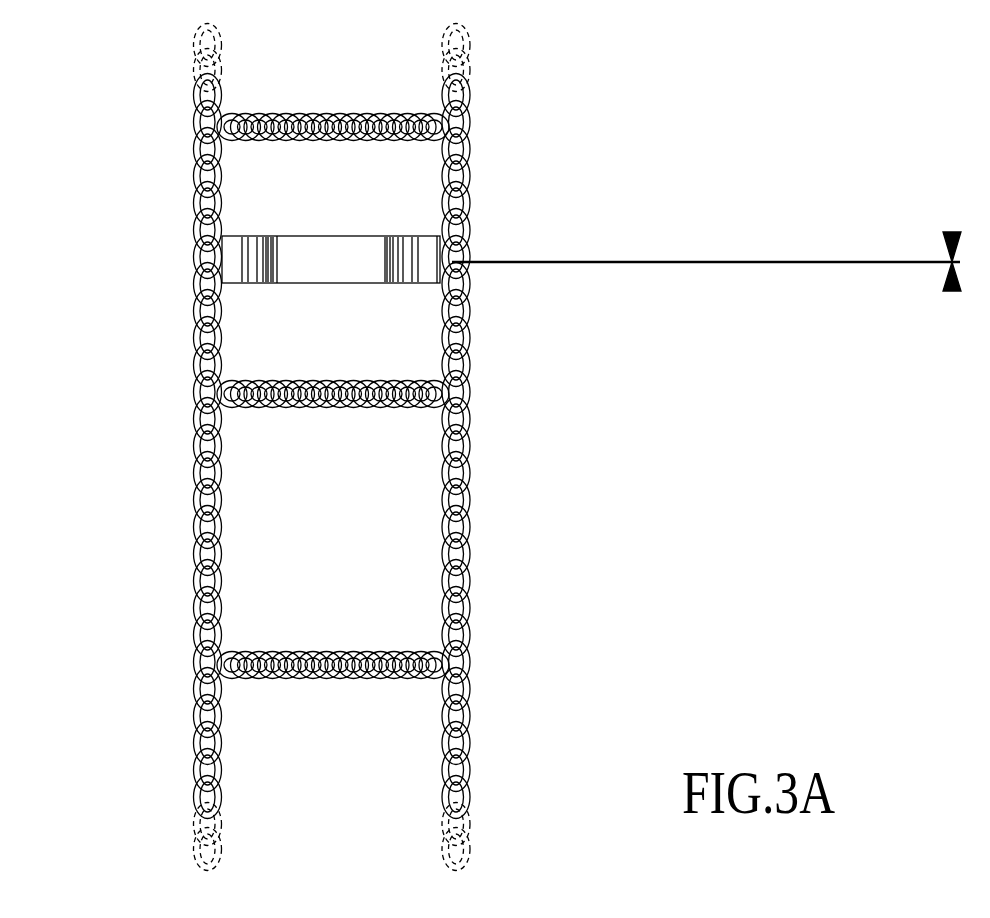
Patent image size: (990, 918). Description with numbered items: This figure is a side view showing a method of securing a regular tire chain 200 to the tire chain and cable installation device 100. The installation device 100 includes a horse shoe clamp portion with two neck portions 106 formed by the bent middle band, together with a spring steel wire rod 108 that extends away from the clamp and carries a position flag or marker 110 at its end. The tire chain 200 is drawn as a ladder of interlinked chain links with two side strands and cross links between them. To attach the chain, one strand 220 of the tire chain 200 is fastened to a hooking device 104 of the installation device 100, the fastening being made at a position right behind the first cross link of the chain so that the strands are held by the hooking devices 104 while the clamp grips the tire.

The tire chain and cable installation device 100 is at (331, 260).
The hooking device 104 is at (205, 263).
The neck portion 106 is at (385, 288).
The spring steel wire rod 108 is at (806, 262).
The position flag or marker 110 is at (953, 232).
The tire chain 200 is at (468, 315).
The strand 220 is at (467, 253).